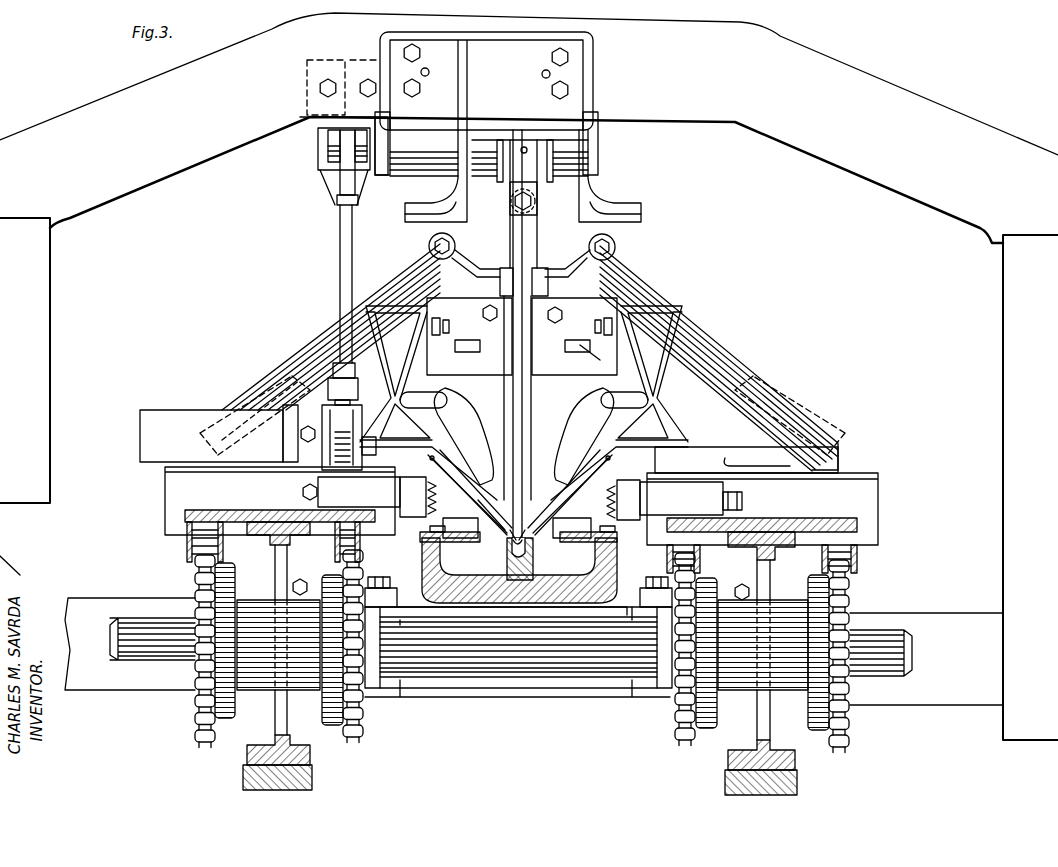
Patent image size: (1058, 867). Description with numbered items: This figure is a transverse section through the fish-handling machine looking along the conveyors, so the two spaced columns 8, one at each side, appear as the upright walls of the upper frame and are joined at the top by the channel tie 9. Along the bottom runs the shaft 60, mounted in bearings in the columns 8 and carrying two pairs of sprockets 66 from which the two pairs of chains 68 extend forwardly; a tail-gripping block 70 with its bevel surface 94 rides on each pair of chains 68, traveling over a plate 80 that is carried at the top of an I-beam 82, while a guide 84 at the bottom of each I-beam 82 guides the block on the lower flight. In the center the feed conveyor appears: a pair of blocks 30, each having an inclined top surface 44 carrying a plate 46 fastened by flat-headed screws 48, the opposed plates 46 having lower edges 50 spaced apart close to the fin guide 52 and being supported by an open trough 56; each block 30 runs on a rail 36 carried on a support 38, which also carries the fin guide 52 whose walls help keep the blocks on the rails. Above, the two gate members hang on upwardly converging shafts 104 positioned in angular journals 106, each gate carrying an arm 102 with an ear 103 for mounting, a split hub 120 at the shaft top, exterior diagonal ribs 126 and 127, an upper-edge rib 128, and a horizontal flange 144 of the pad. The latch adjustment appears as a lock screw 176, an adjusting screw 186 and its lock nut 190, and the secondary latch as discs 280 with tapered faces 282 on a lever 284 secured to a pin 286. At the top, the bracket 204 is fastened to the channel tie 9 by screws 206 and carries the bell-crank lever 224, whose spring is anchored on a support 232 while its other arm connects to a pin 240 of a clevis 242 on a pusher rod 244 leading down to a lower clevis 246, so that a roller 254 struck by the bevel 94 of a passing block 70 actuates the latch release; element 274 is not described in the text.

The column 8 is at (42, 318).
The channel tie 9 is at (779, 134).
The block 30 is at (462, 526).
The rail 36 is at (422, 536).
The support 38 is at (420, 558).
The inclined top surface 44 is at (540, 522).
The plate 46 is at (566, 514).
The flat-headed screws 48 is at (520, 520).
The lower edges 50 is at (520, 522).
The fin guide 52 is at (534, 563).
The open trough 56 is at (604, 468).
The shaft 60 is at (530, 672).
The sprockets 66 is at (205, 750).
The chains 68 is at (335, 551).
The block 70 is at (165, 492).
The plate 80 is at (185, 516).
The I-beam 82 is at (276, 721).
The guide 84 is at (312, 778).
The bevel surface 94 is at (269, 470).
The arm 102 is at (738, 425).
The ear 103 is at (260, 398).
The shaft 104 is at (285, 378).
The journal 106 is at (316, 350).
The split hub 120 is at (430, 250).
The rib 126 is at (398, 383).
The rib 127 is at (524, 421).
The rib 128 is at (376, 308).
The horizontal flange 144 is at (487, 372).
The lock screw 176 is at (527, 306).
The adjusting screw 186 is at (628, 332).
The lock nut 190 is at (590, 358).
The bracket 204 is at (463, 98).
The screws 206 is at (418, 62).
The bell-crank lever 224 is at (370, 176).
The support 232 is at (340, 208).
The pin 240 is at (318, 152).
The clevis 242 is at (345, 178).
The pusher rod 244 is at (340, 262).
The clevis 246 is at (358, 396).
The roller 254 is at (351, 492).
The column 274 is at (525, 185).
The disc 280 is at (573, 338).
The tapered face 282 is at (500, 337).
The lever 284 is at (546, 260).
The pin 286 is at (505, 268).